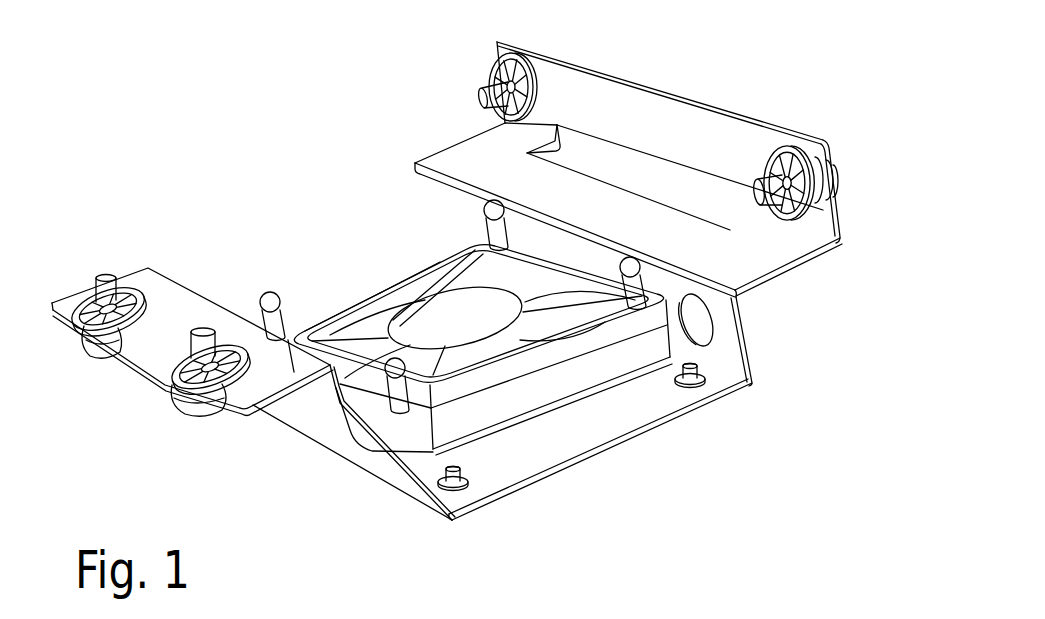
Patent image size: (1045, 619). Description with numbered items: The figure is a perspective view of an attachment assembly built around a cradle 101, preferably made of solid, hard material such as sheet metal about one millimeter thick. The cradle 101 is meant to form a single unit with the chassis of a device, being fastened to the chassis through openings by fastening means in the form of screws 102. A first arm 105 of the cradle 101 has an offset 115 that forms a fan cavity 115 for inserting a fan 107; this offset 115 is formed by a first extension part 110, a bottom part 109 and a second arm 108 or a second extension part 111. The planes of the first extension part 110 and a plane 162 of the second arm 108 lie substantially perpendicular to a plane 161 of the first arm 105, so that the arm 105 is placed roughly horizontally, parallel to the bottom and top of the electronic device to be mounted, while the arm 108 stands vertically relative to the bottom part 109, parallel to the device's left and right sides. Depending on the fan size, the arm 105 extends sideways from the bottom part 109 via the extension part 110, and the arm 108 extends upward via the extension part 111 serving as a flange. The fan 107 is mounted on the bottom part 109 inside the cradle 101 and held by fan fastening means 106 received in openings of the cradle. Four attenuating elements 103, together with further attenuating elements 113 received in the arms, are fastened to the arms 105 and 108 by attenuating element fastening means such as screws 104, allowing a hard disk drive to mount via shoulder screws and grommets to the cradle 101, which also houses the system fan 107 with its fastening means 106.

The cradle 101 is at (597, 460).
The screws 102 is at (468, 480).
The attenuating elements 103 is at (181, 405).
The screws 104 is at (213, 390).
The first arm 105 is at (167, 277).
The fan fastening means 106 is at (268, 297).
The fan 107 is at (380, 277).
The second arm 108 is at (497, 43).
The bottom part 109 is at (597, 420).
The first extension part 110 is at (297, 412).
The second extension part 111 is at (722, 360).
The attenuating elements 113 is at (792, 143).
The offset 115 is at (403, 245).
The plane of the first arm 161 is at (137, 277).
The plane of the second arm 162 is at (722, 140).